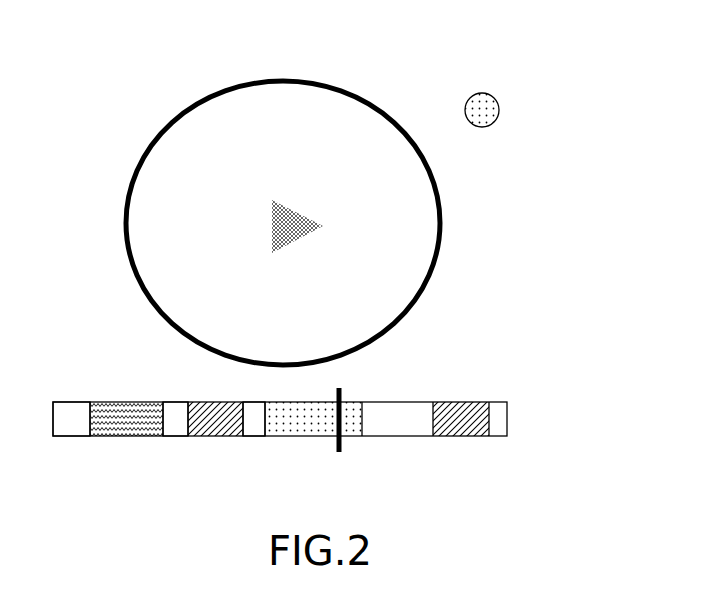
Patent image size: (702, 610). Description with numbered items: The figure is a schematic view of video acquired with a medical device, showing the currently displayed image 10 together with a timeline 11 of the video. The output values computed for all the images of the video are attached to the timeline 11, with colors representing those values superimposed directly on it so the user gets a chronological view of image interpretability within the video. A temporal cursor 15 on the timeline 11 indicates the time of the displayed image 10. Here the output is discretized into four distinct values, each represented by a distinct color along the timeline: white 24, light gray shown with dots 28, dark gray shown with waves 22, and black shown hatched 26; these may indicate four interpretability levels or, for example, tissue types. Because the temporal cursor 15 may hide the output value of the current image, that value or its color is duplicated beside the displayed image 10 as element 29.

The displayed image 10 is at (401, 119).
The timeline 11 is at (413, 372).
The temporal cursor 15 is at (340, 452).
The dark gray (wave) value 22 is at (125, 420).
The white value 24 is at (253, 410).
The black (hatched) value 26 is at (217, 420).
The light gray (dot) value 28 is at (300, 420).
The output value indicator 29 is at (499, 105).